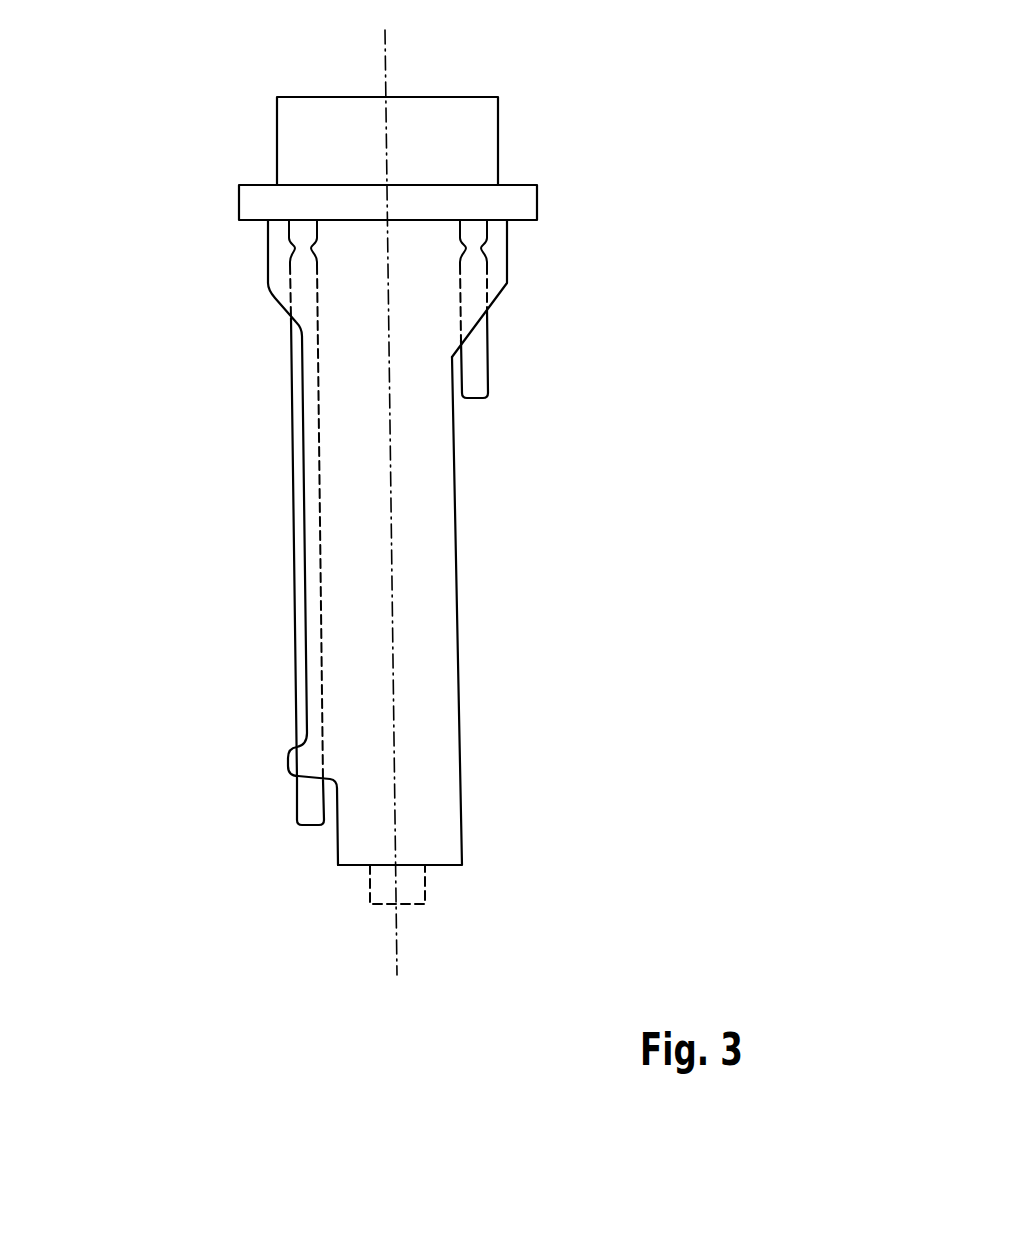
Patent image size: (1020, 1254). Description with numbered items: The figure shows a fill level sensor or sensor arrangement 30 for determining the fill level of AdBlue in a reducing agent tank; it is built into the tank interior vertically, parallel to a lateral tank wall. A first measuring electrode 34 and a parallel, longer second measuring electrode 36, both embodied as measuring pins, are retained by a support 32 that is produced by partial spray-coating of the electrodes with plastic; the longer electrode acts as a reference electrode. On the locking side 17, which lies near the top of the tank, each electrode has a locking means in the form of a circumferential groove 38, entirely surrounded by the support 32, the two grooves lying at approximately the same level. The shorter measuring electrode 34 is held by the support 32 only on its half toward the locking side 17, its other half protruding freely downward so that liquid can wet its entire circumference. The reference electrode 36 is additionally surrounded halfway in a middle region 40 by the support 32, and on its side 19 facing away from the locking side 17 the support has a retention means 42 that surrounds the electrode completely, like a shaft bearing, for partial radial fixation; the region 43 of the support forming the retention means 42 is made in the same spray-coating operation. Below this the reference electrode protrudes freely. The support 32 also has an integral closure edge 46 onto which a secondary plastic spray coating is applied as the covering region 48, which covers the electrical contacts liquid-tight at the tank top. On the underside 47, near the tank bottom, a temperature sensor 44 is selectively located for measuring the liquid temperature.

The locking side 17 is at (247, 298).
The side of the reference electrode facing away from the locking side 19 is at (275, 622).
The sensor arrangement 30 is at (483, 577).
The support 32 is at (440, 525).
The first measuring electrode 34 is at (478, 373).
The second measuring electrode 36 is at (308, 802).
The circumferential groove 38 is at (297, 252).
The middle region 40 is at (298, 433).
The retention means 42 is at (293, 758).
The region of the support forming the retention means 43 is at (285, 770).
The temperature sensor 44 is at (408, 887).
The closure edge 46 is at (525, 202).
The underside 47 is at (330, 910).
The covering region 48 is at (483, 118).